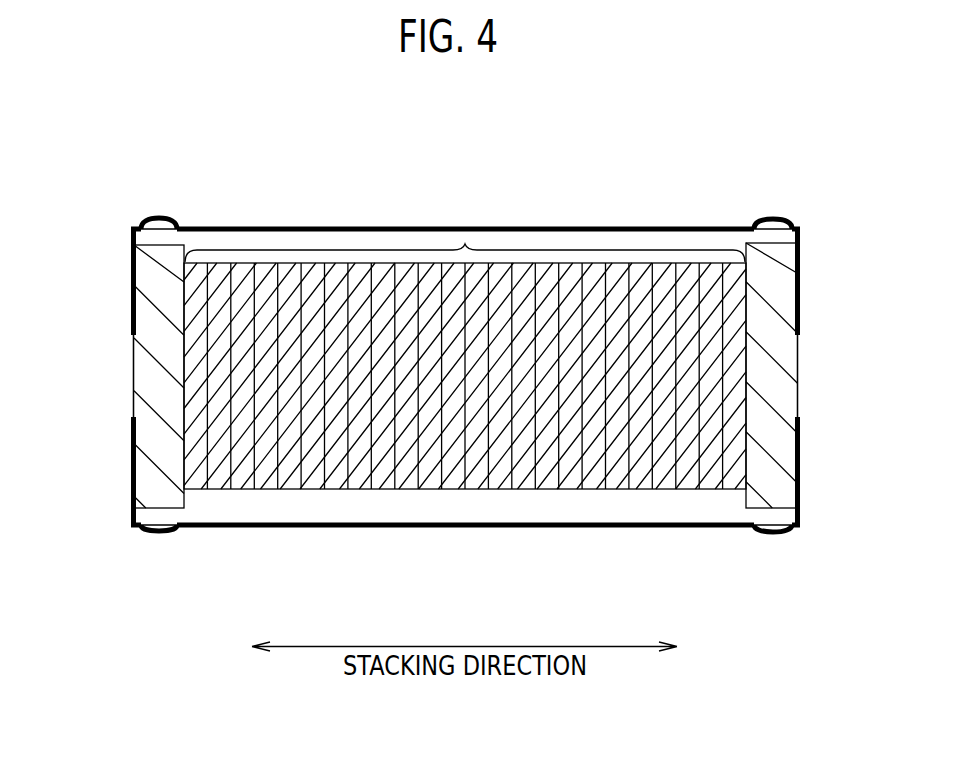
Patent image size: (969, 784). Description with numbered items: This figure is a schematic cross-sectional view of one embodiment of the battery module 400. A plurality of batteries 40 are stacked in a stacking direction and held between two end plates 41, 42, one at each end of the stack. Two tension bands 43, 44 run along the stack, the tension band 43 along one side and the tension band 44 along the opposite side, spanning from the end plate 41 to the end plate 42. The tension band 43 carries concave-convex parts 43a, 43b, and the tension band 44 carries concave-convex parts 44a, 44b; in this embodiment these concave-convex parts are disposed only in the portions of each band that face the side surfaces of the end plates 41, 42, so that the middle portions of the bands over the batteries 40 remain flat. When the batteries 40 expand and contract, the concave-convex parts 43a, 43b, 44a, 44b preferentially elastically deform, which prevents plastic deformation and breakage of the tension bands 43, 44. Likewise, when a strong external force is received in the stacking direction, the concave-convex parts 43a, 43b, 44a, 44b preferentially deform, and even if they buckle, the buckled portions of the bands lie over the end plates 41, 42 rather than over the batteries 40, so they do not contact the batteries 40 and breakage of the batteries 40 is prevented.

The battery module 400 is at (104, 189).
The batteries 40 is at (465, 245).
The end plate 41 is at (152, 376).
The end plate 42 is at (770, 388).
The tension band 43 is at (403, 227).
The concave-convex part 43a is at (182, 217).
The concave-convex part 43b is at (797, 218).
The tension band 44 is at (490, 527).
The concave-convex part 44a is at (182, 537).
The concave-convex part 44b is at (797, 537).